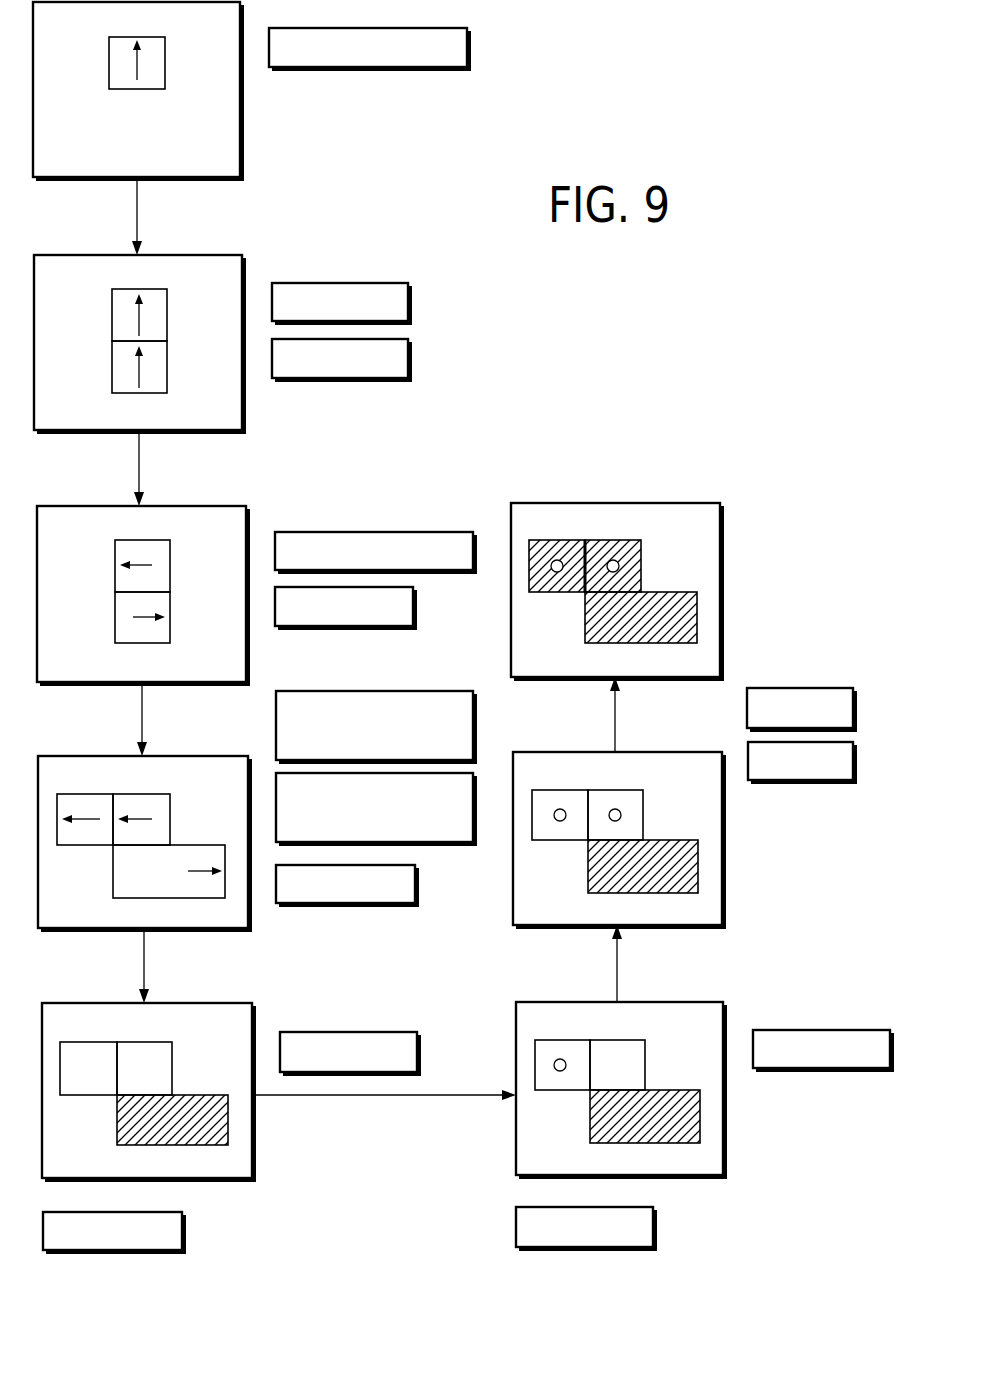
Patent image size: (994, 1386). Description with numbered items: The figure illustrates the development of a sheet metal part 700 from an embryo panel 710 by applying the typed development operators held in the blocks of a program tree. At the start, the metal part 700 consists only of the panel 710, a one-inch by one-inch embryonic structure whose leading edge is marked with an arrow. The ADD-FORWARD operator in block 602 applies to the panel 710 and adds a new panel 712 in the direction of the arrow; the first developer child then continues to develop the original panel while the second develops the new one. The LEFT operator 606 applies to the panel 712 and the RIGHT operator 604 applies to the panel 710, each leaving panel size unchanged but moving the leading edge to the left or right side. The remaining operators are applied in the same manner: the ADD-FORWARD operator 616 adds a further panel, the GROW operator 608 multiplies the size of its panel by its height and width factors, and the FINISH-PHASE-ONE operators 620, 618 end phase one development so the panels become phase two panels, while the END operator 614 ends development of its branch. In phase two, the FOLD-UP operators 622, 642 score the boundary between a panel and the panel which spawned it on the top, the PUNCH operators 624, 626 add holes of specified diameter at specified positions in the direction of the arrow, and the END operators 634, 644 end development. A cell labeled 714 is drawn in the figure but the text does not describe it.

The sheet metal part 700 is at (83, 167).
The embryo panel 710 is at (166, 78).
The panel 712 is at (168, 326).
The start cell 714 is at (90, 792).
The ADD-FORWARD operator block 602 is at (180, 49).
The RIGHT operator 604 is at (180, 358).
The LEFT operator 606 is at (180, 301).
The GROW operator block 608 is at (184, 608).
The END operator block 614 is at (237, 883).
The ADD-FORWARD operator block 616 is at (184, 552).
The FINISH-PHASE-ONE operator block 618 is at (184, 806).
The FINISH-PHASE-ONE operator block 620 is at (395, 749).
The FOLD-UP operator block 622 is at (186, 1055).
The PUNCH operator block 624 is at (87, 1107).
The PUNCH operator block 626 is at (659, 1050).
The END operator block 634 is at (842, 770).
The FOLD-UP operator block 642 is at (560, 1102).
The END operator block 644 is at (840, 717).